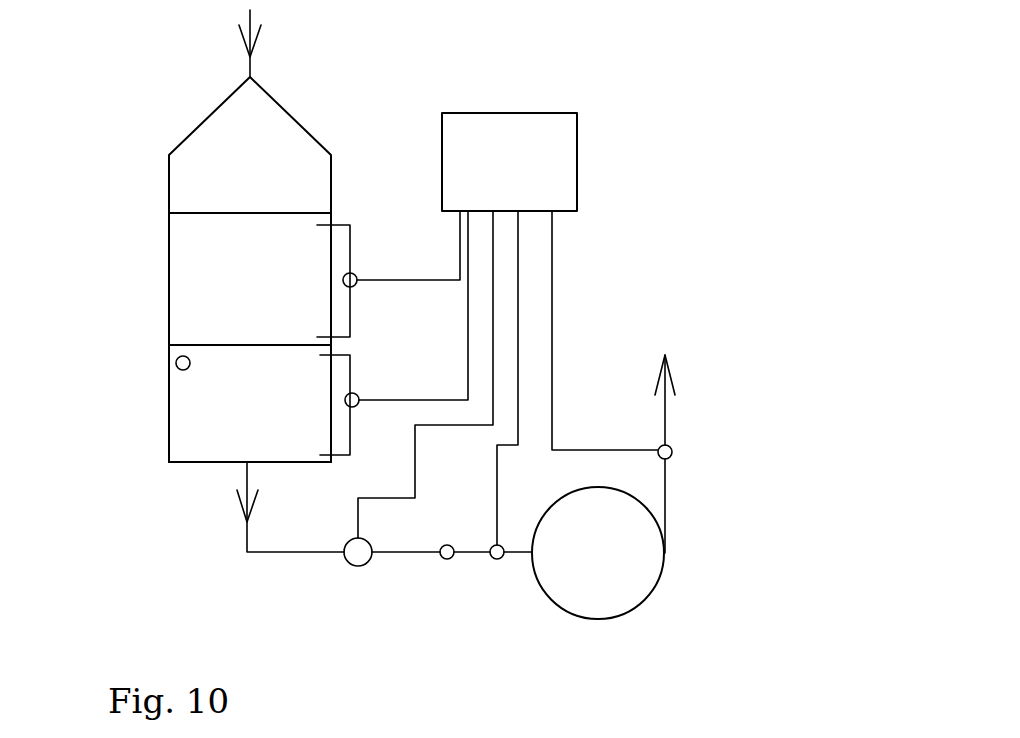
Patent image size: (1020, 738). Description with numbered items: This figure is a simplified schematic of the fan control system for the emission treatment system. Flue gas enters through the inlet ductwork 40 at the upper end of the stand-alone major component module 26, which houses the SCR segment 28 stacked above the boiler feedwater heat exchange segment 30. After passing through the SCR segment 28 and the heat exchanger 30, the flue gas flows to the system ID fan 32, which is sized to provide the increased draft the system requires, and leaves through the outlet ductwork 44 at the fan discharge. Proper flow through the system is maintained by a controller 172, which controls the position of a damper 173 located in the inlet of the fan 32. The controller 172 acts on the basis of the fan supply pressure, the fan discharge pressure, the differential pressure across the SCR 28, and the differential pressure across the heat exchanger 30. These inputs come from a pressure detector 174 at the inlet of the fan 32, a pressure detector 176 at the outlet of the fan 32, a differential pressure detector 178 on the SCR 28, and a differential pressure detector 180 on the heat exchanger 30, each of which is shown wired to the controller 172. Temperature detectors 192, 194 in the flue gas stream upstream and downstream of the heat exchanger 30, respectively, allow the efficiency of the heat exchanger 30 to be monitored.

The major component module 26 is at (142, 152).
The SCR segment 28 is at (180, 253).
The boiler feedwater heat exchange segment 30 is at (186, 437).
The ID fan 32 is at (598, 622).
The inlet ductwork 40 is at (253, 13).
The outlet ductwork 44 is at (660, 368).
The controller 172 is at (510, 113).
The damper 173 is at (358, 566).
The pressure detector 174 is at (497, 565).
The pressure detector 176 is at (670, 460).
The differential pressure detector 178 is at (356, 275).
The differential pressure detector 180 is at (358, 393).
The temperature detector 192 is at (176, 363).
The temperature detector 194 is at (452, 545).